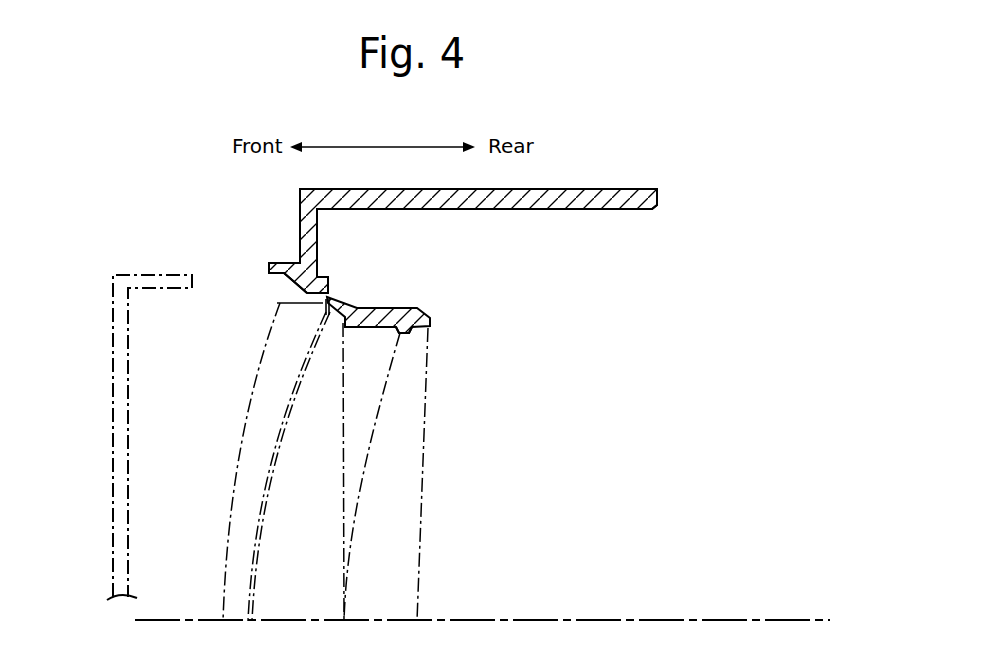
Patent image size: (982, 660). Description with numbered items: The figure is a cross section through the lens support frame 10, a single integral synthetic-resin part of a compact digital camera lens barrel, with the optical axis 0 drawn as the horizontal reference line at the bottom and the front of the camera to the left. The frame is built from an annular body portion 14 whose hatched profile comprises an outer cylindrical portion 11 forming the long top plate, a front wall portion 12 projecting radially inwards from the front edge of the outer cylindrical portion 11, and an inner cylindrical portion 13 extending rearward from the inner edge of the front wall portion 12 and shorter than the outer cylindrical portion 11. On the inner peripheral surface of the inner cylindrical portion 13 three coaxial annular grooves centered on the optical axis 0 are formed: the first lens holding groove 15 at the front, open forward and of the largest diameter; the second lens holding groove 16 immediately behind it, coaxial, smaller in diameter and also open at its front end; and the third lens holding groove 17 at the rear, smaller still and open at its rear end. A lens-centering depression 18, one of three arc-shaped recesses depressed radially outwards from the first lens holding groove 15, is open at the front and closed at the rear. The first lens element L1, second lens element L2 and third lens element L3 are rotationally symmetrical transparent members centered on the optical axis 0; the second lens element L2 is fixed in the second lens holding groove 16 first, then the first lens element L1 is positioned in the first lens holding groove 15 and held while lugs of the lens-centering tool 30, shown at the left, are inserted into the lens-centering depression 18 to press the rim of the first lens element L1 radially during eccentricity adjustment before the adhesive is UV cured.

The lens support frame 10 is at (595, 193).
The outer cylindrical portion 11 is at (650, 189).
The front wall portion 12 is at (302, 225).
The inner cylindrical portion 13 is at (397, 310).
The annular body portion 14 is at (538, 200).
The first lens holding groove 15 is at (323, 305).
The second lens holding groove 16 is at (345, 335).
The third lens holding groove 17 is at (412, 333).
The lens-centering depression 18 is at (285, 272).
The lens-centering tool 30 is at (112, 293).
The first lens element L1 is at (250, 467).
The second lens element L2 is at (270, 540).
The third lens element L3 is at (400, 522).
The optical axis 0 is at (580, 620).